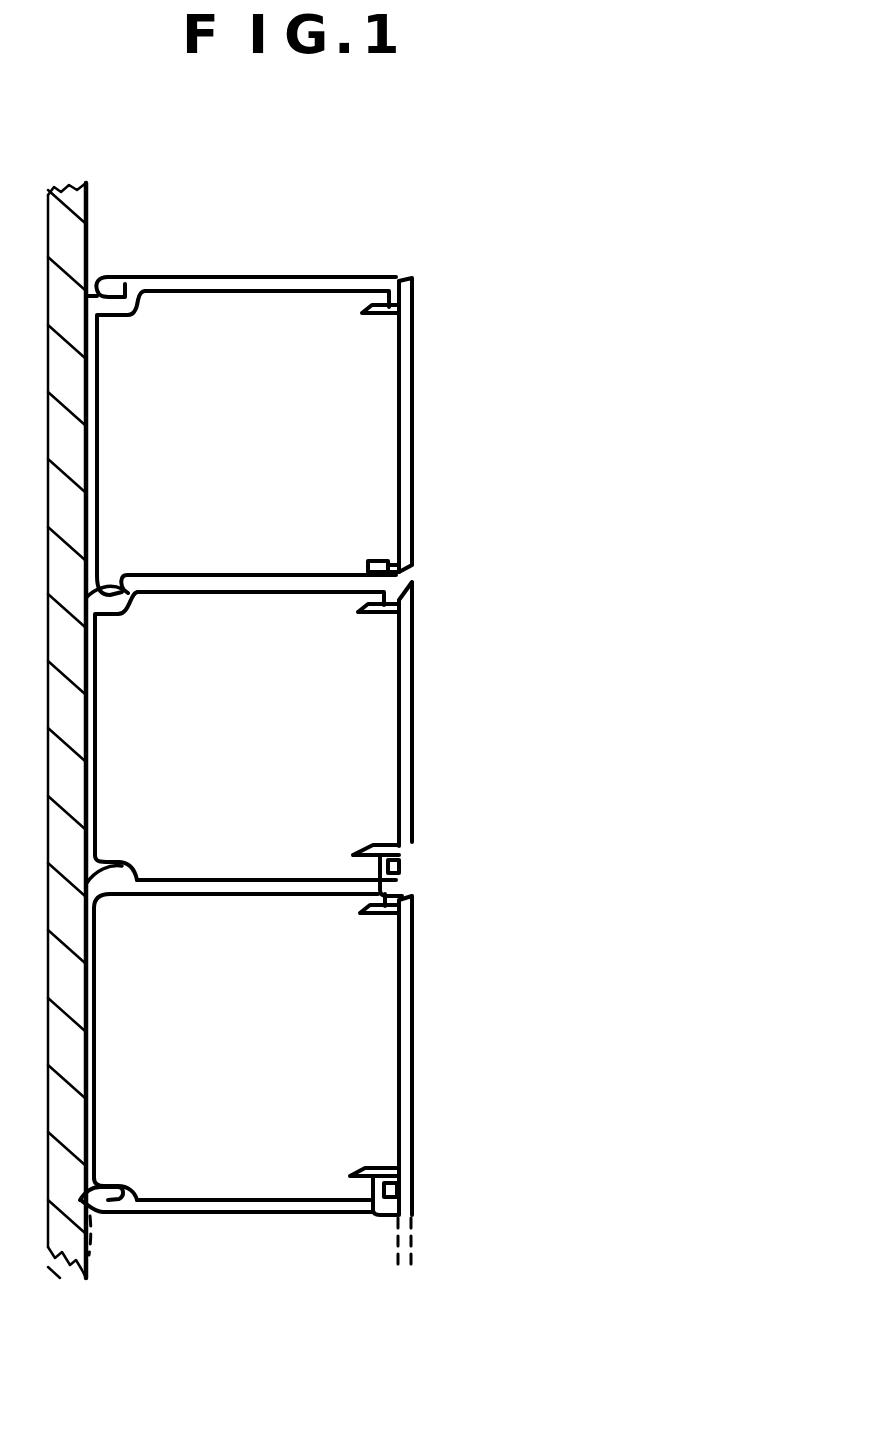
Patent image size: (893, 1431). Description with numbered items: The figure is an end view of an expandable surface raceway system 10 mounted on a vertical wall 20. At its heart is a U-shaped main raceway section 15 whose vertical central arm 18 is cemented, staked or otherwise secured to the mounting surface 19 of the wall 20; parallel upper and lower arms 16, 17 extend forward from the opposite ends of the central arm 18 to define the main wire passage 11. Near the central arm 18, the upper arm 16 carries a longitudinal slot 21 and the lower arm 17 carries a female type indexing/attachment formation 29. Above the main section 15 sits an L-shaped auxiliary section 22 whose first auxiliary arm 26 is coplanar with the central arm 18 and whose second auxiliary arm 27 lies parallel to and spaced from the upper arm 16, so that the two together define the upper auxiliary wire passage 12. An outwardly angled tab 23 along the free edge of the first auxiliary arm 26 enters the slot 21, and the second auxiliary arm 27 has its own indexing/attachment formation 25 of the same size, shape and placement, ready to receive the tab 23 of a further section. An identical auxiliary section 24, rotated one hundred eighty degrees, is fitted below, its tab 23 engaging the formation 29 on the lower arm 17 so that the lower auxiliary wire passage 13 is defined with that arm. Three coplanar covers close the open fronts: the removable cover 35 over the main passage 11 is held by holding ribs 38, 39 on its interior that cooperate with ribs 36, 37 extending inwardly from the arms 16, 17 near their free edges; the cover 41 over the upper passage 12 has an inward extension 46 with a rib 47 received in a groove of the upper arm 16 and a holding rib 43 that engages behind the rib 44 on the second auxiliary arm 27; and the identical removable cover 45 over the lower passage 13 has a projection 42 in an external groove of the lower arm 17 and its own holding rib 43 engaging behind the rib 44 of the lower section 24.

The expandable surface raceway system 10 is at (527, 354).
The main wire passage 11 is at (323, 687).
The auxiliary wire passage 12 is at (326, 700).
The auxiliary wire passage 13 is at (316, 1036).
The main raceway section 15 is at (198, 577).
The upper arm 16 is at (245, 598).
The lower arm 17 is at (253, 831).
The vertical central arm 18 is at (100, 762).
The mounting surface 19 is at (89, 192).
The vertical wall 20 is at (90, 233).
The slot 21 is at (103, 583).
The auxiliary section 22 is at (316, 700).
The outwardly angled tab 23 is at (104, 615).
The auxiliary section 24 is at (226, 1195).
The indexing/attachment formation 25 is at (97, 285).
The first auxiliary arm 26 is at (102, 465).
The second auxiliary arm 27 is at (250, 276).
The female type indexing/attachment formation 29 is at (132, 868).
The removable cover 35 is at (418, 793).
The rib 36 is at (412, 592).
The rib 37 is at (413, 880).
The holding rib 38 is at (376, 620).
The holding rib 39 is at (412, 853).
The cover 41 is at (418, 432).
The projection 42 is at (378, 903).
The holding rib 43 is at (375, 315).
The rib 44 is at (405, 294).
The removable cover 45 is at (418, 1081).
The inward extension 46 is at (366, 560).
The rib 47 is at (396, 565).